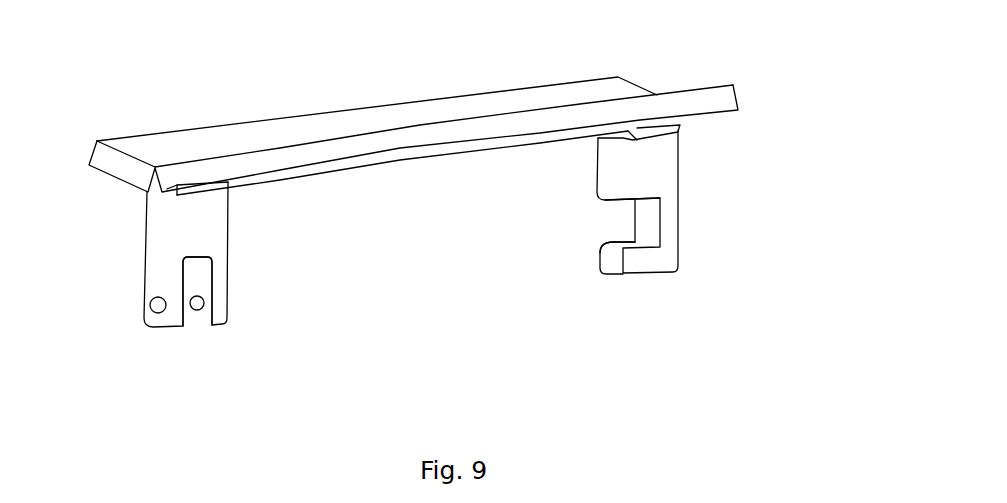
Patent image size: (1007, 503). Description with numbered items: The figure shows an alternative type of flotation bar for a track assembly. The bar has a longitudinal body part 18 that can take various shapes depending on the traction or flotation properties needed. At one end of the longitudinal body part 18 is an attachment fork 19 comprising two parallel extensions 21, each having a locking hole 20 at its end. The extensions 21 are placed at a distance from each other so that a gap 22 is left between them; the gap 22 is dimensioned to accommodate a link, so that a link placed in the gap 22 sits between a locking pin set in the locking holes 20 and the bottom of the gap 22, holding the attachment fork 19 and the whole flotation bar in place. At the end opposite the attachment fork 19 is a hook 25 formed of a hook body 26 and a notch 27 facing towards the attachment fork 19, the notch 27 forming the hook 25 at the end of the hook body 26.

The longitudinal body part 18 is at (413, 105).
The attachment fork 19 is at (180, 316).
The locking hole 20 is at (117, 329).
The extension 21 is at (133, 254).
The gap 22 is at (252, 322).
The hook 25 is at (679, 254).
The hook body 26 is at (727, 199).
The notch 27 is at (581, 235).